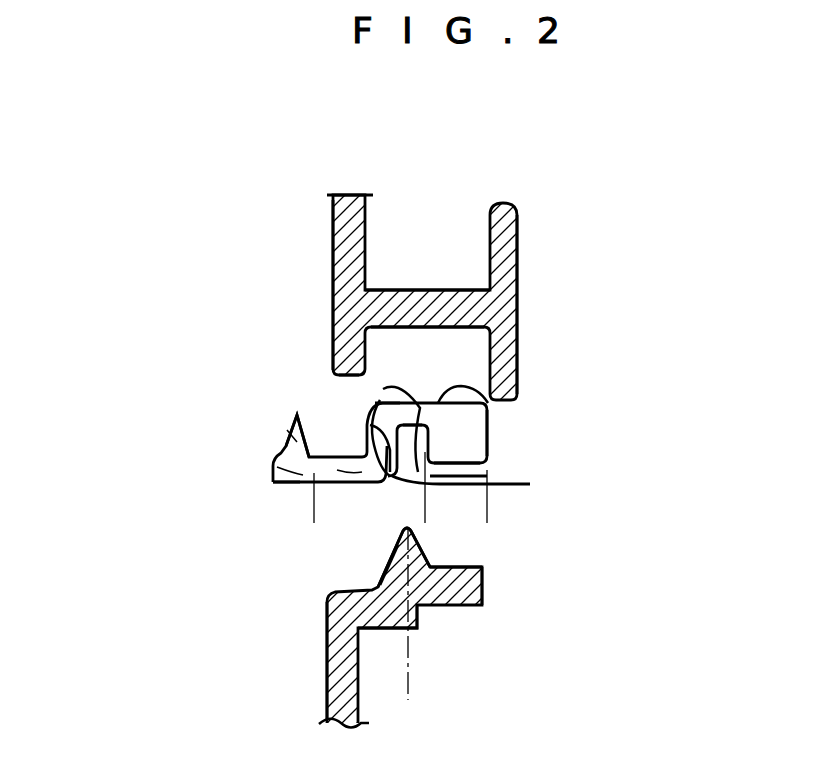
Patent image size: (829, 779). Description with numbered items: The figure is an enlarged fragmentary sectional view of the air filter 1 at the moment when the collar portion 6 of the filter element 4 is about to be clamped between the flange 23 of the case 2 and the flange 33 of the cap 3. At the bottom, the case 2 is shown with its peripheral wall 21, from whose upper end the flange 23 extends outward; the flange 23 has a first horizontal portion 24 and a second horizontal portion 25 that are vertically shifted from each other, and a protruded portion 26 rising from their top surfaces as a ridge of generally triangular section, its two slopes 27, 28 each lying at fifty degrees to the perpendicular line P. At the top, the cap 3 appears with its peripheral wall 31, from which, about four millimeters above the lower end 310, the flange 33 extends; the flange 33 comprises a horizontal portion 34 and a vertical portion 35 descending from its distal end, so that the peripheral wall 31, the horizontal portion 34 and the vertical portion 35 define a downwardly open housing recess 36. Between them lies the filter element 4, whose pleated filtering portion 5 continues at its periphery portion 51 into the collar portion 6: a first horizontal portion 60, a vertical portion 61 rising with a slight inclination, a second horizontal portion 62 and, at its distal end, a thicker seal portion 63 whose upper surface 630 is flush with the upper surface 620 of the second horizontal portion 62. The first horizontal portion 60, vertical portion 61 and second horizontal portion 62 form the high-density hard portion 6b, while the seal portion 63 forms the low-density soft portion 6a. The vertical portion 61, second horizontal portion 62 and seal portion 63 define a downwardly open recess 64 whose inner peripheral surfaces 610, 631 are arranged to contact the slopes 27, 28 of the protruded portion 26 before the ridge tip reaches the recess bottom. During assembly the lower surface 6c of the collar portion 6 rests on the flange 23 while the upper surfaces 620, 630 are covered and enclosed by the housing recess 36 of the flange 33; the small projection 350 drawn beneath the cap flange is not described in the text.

The air filter 1 is at (220, 245).
The case 2 is at (303, 636).
The cap 3 is at (310, 226).
The filter element 4 is at (220, 466).
The filtering portion 5 is at (294, 440).
The collar portion 6 is at (668, 525).
The peripheral wall 21 is at (328, 683).
The flange 23 is at (620, 568).
The first horizontal portion 24 is at (395, 631).
The second horizontal portion 25 is at (482, 606).
The protruded portion 26 is at (425, 550).
The slope 27 is at (400, 550).
The slope 28 is at (420, 548).
The peripheral wall 31 is at (338, 348).
The flange 33 is at (613, 115).
The horizontal portion 34 is at (423, 292).
The vertical portion 35 is at (518, 365).
The housing recess 36 is at (520, 398).
The periphery portion 51 is at (300, 470).
The first horizontal portion 60 is at (378, 486).
The vertical portion 61 is at (548, 505).
The second horizontal portion 62 is at (530, 484).
The seal portion 63 is at (410, 444).
The recess 64 is at (457, 438).
The lower end 310 is at (338, 376).
The projection 350 is at (487, 398).
The inner peripheral surface 610 is at (369, 425).
The upper surface 620 is at (400, 398).
The upper surface 630 is at (496, 406).
The inner peripheral surface 631 is at (470, 468).
The low-density soft portion 6a is at (425, 502).
The high-density hard portion 6b is at (414, 507).
The lower surface 6c is at (297, 485).
The perpendicular line P is at (408, 668).